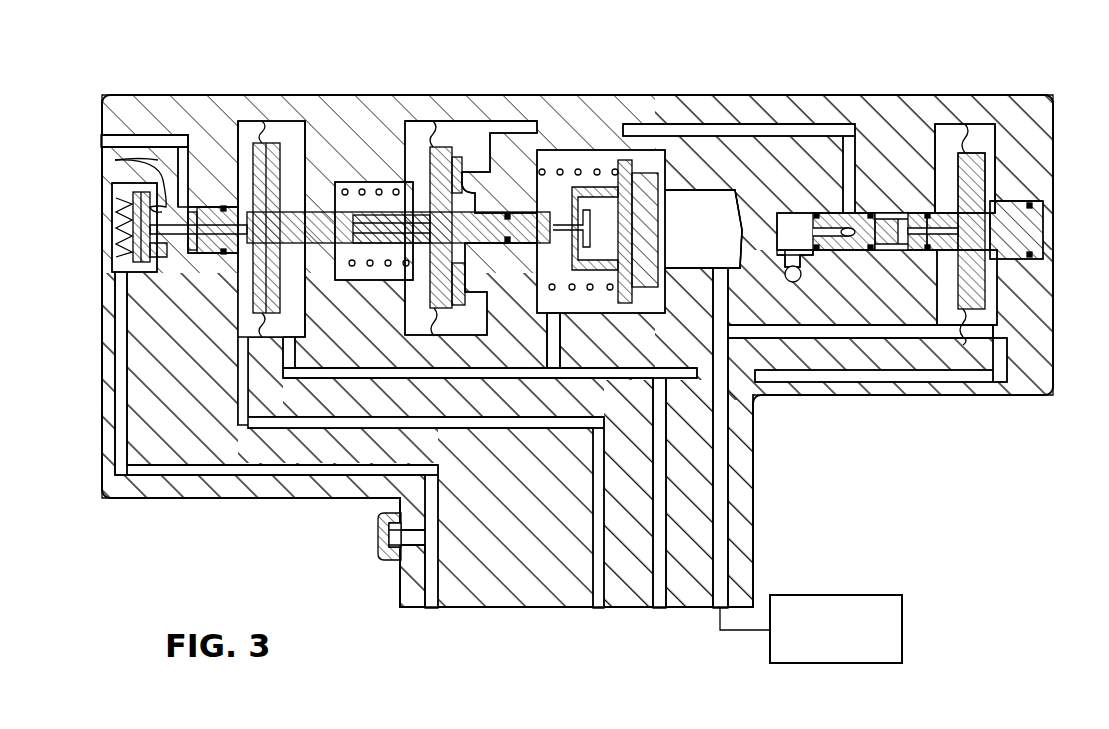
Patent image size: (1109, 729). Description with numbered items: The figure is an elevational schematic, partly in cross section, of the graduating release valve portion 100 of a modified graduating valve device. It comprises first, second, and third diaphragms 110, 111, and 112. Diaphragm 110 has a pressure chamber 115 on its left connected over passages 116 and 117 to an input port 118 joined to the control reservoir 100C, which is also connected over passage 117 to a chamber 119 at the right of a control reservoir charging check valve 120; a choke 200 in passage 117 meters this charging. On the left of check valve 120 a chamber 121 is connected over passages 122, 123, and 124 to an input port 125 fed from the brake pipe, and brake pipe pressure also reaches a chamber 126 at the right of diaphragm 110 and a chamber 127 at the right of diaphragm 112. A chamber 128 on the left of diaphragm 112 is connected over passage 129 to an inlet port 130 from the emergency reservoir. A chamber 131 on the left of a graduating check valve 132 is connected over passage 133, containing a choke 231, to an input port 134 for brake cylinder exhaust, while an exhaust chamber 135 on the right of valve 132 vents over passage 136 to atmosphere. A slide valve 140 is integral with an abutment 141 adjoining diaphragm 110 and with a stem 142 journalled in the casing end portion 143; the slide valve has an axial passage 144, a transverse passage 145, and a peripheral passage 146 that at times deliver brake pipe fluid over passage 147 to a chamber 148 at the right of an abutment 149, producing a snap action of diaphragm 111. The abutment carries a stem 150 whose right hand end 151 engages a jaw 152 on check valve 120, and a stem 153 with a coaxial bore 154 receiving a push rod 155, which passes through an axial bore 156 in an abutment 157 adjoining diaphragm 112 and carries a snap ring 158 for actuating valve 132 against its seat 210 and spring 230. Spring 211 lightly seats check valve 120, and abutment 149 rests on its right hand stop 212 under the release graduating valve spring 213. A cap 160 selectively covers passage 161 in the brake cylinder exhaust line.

The graduating release valve portion 100 is at (548, 90).
The control reservoir 100C is at (850, 595).
The first diaphragm 110 is at (965, 124).
The second diaphragm 111 is at (441, 145).
The third diaphragm 112 is at (262, 121).
The pressure chamber 115 is at (935, 215).
The passage 116 is at (868, 332).
The passage 117 is at (720, 505).
The input port 118 is at (718, 605).
The chamber 119 is at (695, 188).
The control reservoir charging check valve 120 is at (640, 175).
The chamber 121 is at (580, 168).
The passage 122 is at (557, 342).
The passage 123 is at (612, 378).
The passage 124 is at (660, 479).
The input port 125 is at (660, 600).
The chamber 126 is at (995, 125).
The chamber 127 is at (272, 160).
The chamber 128 is at (238, 308).
The passage 129 is at (310, 430).
The inlet port 130 is at (598, 600).
The chamber 131 is at (118, 232).
The graduating check valve 132 is at (133, 262).
The passage 133 is at (212, 476).
The input port 134 is at (428, 600).
The exhaust chamber 135 is at (195, 255).
The passage 136 is at (100, 137).
The slide valve 140 is at (848, 250).
The abutment 141 is at (985, 178).
The stem 142 is at (1040, 236).
The end portion 143 is at (1054, 294).
The axial passage 144 is at (925, 195).
The transverse passage 145 is at (1000, 210).
The peripheral passage 146 is at (900, 250).
The passage 147 is at (768, 125).
The chamber 148 is at (470, 140).
The abutment 149 is at (545, 244).
The stem 150 is at (512, 212).
The right hand end 151 is at (648, 232).
The jaw 152 is at (612, 180).
The stem 153 is at (362, 268).
The coaxial bore 154 is at (397, 245).
The push rod 155 is at (362, 188).
The axial bore 156 is at (228, 148).
The abutment 157 is at (318, 152).
The snap ring 158 is at (192, 252).
The cap 160 is at (378, 537).
The passage 161 is at (420, 537).
The choke 200 is at (730, 297).
The seat 210 is at (115, 160).
The spring 211 is at (593, 292).
The right hand stop 212 is at (465, 290).
The release graduating valve spring 213 is at (433, 121).
The spring 230 is at (116, 176).
The choke 231 is at (128, 300).